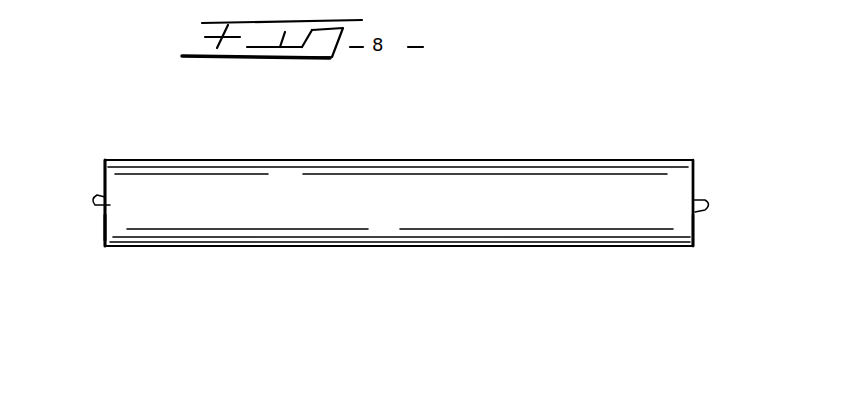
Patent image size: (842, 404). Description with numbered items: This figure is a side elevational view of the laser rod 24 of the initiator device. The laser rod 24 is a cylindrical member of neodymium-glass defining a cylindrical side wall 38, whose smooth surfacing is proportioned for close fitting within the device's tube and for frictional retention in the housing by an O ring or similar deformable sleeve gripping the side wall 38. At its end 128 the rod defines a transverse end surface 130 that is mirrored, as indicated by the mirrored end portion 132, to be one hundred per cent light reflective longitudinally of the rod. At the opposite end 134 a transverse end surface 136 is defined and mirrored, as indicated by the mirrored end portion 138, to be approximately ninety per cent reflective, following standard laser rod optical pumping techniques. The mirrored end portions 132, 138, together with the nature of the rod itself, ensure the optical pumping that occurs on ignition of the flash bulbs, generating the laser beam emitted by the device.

The laser rod 24 is at (143, 258).
The cylindrical side wall 38 is at (438, 190).
The end 128 is at (125, 180).
The transverse end surface 130 is at (110, 205).
The mirrored end portion 132 is at (105, 222).
The end 134 is at (667, 170).
The transverse end surface 136 is at (703, 212).
The mirrored end portion 138 is at (693, 230).